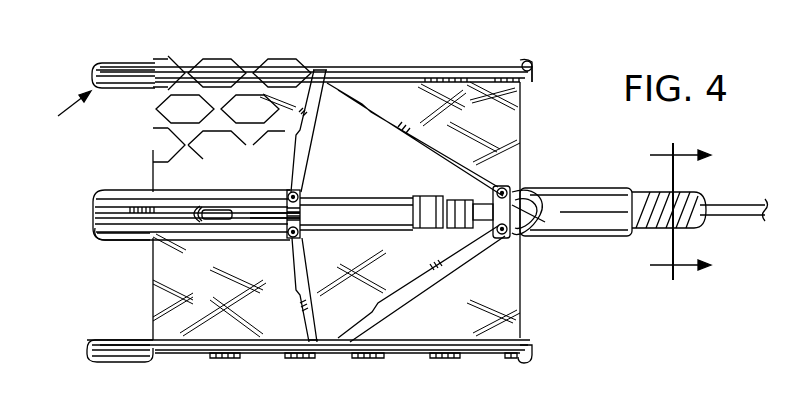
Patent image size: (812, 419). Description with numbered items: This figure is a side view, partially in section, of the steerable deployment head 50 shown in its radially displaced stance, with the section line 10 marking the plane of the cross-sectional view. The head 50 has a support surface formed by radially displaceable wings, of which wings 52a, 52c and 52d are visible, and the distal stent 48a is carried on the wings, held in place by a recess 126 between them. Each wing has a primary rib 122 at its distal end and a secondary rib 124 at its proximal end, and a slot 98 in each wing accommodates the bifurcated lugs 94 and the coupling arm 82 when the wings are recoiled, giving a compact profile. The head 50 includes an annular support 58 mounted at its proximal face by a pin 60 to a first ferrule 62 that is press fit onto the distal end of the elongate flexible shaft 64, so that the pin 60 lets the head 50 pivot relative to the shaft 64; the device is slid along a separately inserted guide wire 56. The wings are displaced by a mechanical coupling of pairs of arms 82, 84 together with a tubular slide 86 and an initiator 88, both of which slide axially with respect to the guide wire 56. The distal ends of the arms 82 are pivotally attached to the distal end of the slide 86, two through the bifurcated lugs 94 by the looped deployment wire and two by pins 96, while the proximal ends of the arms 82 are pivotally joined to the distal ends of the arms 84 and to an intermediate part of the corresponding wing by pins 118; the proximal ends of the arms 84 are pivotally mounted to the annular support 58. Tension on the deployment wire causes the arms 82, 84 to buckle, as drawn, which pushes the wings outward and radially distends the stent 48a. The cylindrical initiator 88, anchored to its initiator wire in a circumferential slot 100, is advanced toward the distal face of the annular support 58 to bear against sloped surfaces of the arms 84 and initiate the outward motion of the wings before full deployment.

The section line 10 is at (659, 211).
The distal stent 48a is at (207, 68).
The head 50 is at (55, 112).
The wing 52a is at (427, 68).
The wing 52c is at (116, 340).
The wing 52d is at (100, 205).
The guide wire 56 is at (740, 210).
The annular support 58 is at (500, 240).
The pin 60 is at (524, 192).
The first ferrule 62 is at (568, 220).
The elongate flexible shaft 64 is at (693, 192).
The arms 82 is at (290, 194).
The arms 84 is at (432, 148).
The tubular slide 86 is at (361, 200).
The initiator 88 is at (433, 200).
The bifurcated lugs 94 is at (300, 194).
The pins 96 is at (290, 237).
The slot 98 is at (203, 228).
The circumferential slot 100 is at (437, 232).
The pins 118 is at (320, 70).
The primary rib 122 is at (115, 64).
The secondary rib 124 is at (530, 64).
The recess 126 is at (265, 2).